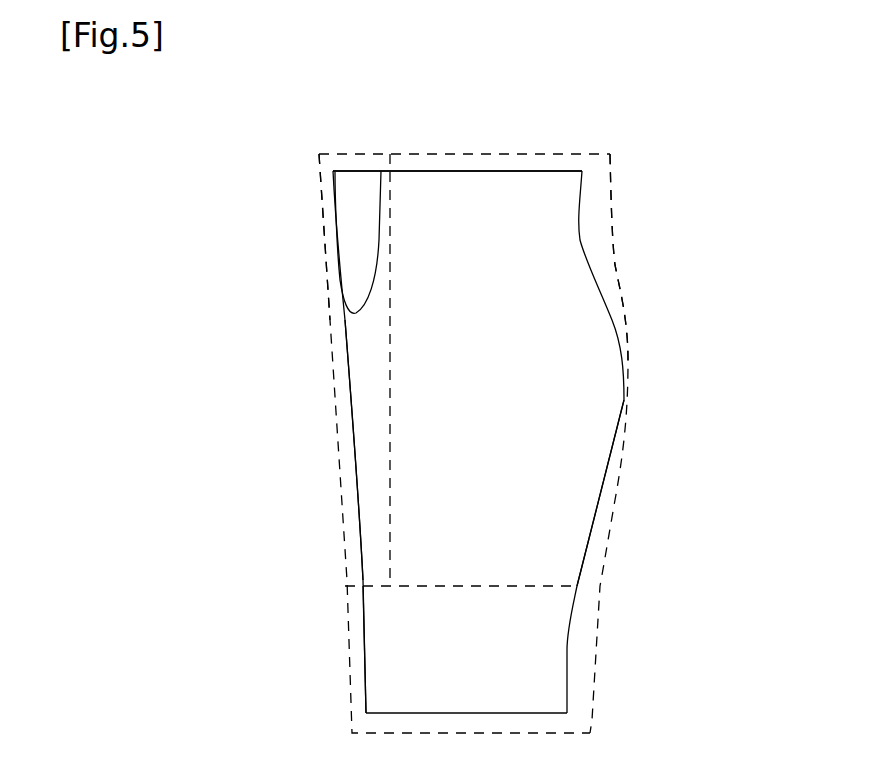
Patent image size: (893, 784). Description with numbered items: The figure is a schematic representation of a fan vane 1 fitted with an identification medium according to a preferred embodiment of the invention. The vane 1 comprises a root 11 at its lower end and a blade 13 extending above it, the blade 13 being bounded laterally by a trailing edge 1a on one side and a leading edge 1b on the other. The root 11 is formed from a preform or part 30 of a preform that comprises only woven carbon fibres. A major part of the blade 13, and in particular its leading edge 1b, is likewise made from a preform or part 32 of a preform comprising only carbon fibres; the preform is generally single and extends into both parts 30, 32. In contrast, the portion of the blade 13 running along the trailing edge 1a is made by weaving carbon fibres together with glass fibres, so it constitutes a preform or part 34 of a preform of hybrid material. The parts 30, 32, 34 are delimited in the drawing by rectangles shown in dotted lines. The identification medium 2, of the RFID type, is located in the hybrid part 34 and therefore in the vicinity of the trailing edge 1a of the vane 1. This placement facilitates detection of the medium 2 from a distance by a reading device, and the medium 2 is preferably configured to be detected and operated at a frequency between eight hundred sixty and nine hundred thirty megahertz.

The fan vane 1 is at (683, 295).
The trailing edge 1a is at (355, 465).
The leading edge 1b is at (603, 492).
The identification medium 2 is at (328, 210).
The root 11 is at (365, 657).
The blade 13 is at (472, 170).
The preform or part of a preform 30 is at (595, 697).
The preform or part of a preform 32 is at (610, 155).
The preform or part of a preform of hybrid material 34 is at (328, 299).